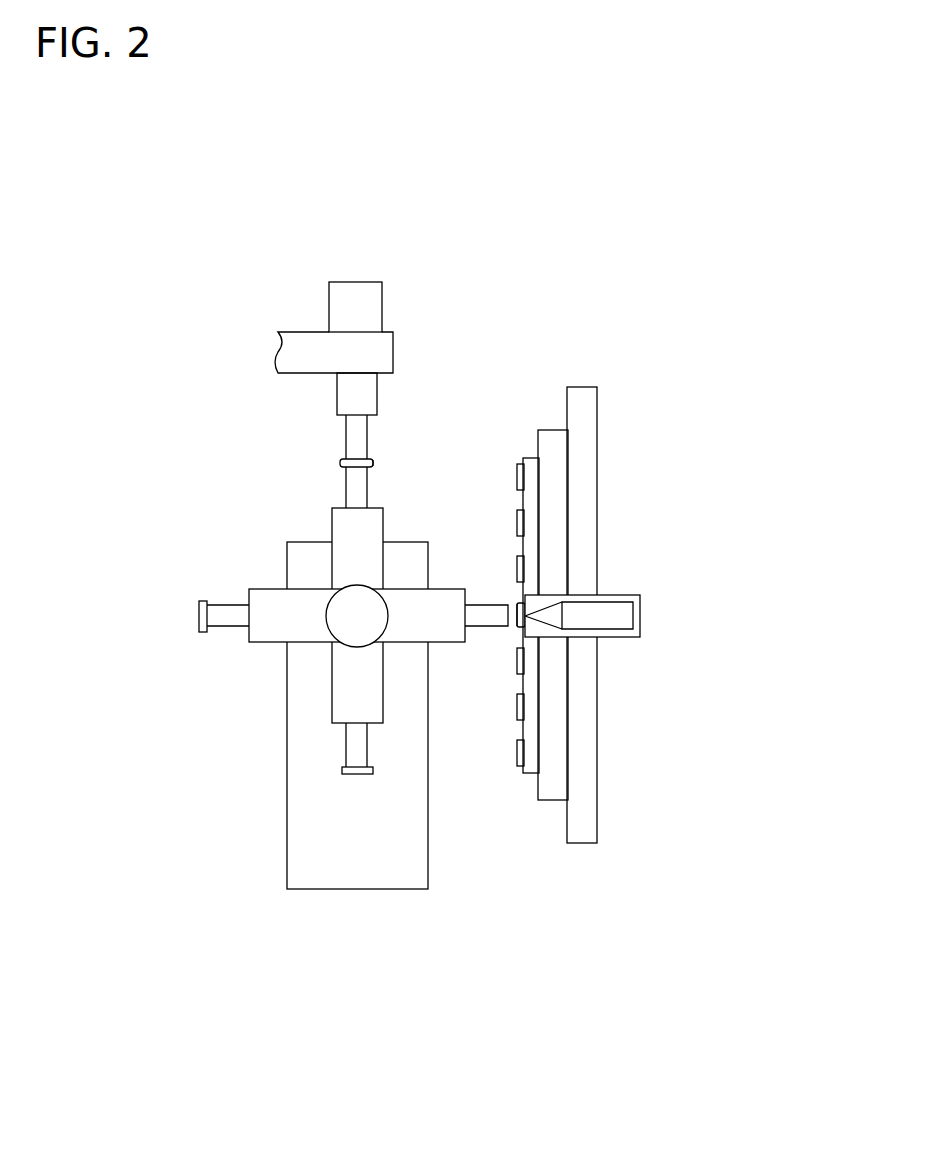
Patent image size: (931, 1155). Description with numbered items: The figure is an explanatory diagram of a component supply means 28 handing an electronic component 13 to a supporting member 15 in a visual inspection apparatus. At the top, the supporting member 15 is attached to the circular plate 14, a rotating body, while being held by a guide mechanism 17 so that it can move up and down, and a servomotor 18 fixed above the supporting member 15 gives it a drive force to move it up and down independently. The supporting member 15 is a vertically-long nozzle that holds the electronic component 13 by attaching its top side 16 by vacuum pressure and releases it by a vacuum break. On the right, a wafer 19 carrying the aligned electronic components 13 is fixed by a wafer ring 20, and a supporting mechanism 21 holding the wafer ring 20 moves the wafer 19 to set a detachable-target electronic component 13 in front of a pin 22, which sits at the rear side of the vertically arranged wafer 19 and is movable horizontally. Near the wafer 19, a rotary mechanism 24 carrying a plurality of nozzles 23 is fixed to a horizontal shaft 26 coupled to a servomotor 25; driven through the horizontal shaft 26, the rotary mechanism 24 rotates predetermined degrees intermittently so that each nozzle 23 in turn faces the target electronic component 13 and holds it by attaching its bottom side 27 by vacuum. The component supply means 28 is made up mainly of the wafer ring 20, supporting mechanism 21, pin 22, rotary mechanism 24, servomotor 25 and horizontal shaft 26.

The electronic component 13 is at (335, 465).
The circular plate 14 is at (380, 353).
The supporting member 15 is at (353, 437).
The top side 16 is at (368, 459).
The guide mechanism 17 is at (352, 393).
The servomotor 18 is at (357, 293).
The wafer 19 is at (532, 763).
The wafer ring 20 is at (557, 788).
The supporting mechanism 21 is at (583, 748).
The pin 22 is at (620, 616).
The nozzle 23 is at (355, 487).
The rotary mechanism 24 is at (318, 695).
The servomotor 25 is at (306, 625).
The horizontal shaft 26 is at (350, 605).
The bottom side 27 is at (371, 467).
The component supply means 28 is at (617, 583).